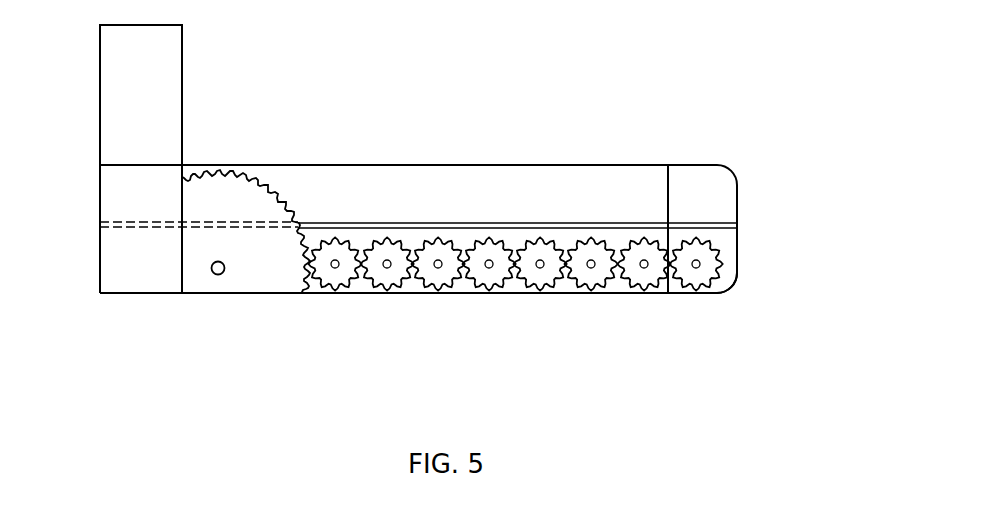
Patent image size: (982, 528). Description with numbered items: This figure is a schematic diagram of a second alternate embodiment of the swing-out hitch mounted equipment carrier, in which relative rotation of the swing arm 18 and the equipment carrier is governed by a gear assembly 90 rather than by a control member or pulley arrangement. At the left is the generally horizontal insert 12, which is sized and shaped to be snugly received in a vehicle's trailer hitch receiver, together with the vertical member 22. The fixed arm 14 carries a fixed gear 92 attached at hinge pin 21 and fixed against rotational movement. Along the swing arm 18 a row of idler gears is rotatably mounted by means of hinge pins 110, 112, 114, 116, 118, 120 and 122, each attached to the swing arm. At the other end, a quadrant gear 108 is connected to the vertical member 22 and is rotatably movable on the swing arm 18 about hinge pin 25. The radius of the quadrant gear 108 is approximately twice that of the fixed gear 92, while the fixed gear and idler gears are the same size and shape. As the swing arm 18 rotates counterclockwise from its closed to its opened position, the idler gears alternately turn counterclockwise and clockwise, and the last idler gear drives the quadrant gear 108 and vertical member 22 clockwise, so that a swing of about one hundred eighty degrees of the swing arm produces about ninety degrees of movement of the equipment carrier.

The insert 12 is at (183, 88).
The fixed arm 14 is at (352, 166).
The swing arm 18 is at (345, 293).
The hinge pin 21 is at (700, 265).
The vertical member 22 is at (112, 272).
The hinge pin 25 is at (212, 275).
The gear assembly 90 is at (246, 326).
The fixed gear 92 is at (731, 278).
The quadrant gear 108 is at (206, 195).
The hinge pin 110 is at (646, 268).
The hinge pin 112 is at (593, 268).
The hinge pin 114 is at (541, 268).
The hinge pin 116 is at (491, 268).
The hinge pin 118 is at (440, 268).
The hinge pin 120 is at (387, 268).
The hinge pin 122 is at (333, 268).